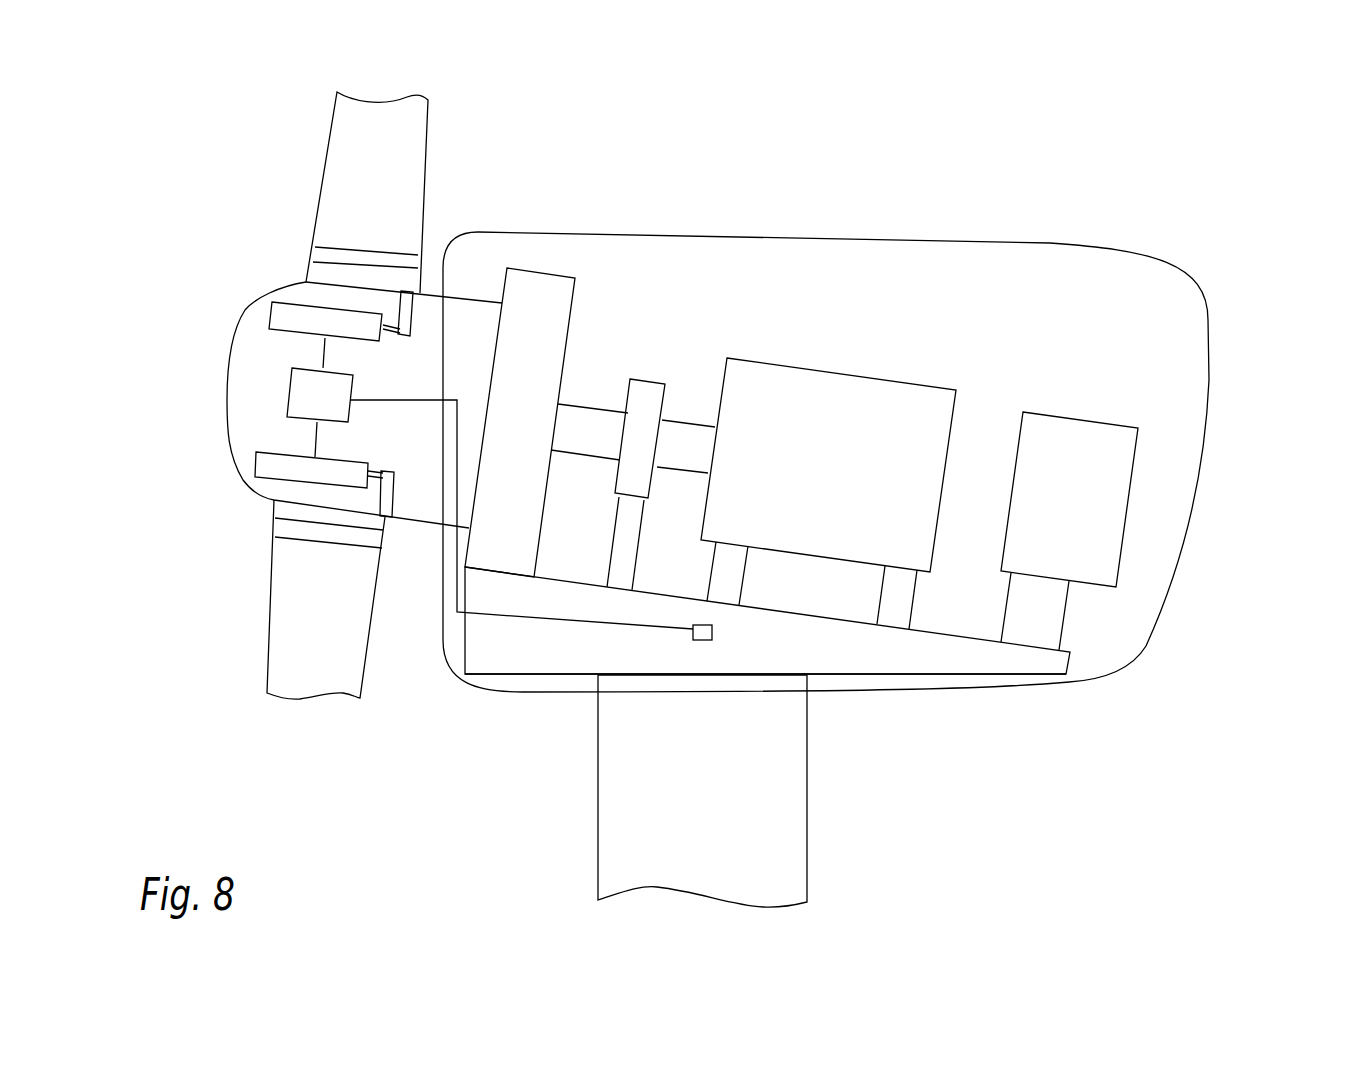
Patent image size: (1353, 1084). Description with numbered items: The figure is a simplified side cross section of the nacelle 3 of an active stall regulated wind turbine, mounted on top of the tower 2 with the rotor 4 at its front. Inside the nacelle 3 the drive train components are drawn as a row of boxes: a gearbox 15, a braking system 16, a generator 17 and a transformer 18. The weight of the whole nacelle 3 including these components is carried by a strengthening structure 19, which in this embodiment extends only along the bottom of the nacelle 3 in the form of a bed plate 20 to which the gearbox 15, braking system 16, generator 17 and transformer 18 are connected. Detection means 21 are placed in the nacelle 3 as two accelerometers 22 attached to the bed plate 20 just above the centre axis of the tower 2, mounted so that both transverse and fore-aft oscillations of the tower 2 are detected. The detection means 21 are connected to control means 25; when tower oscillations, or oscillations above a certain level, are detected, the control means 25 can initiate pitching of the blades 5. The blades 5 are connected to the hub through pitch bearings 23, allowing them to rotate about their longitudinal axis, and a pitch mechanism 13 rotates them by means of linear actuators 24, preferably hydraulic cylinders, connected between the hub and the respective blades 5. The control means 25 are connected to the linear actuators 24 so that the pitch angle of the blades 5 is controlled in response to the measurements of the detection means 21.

The tower 2 is at (777, 862).
The nacelle 3 is at (1243, 267).
The rotor 4 is at (308, 296).
The blades 5 is at (392, 183).
The pitch mechanism 13 is at (375, 483).
The gearbox 15 is at (538, 303).
The braking system 16 is at (648, 402).
The generator 17 is at (795, 415).
The transformer 18 is at (1089, 463).
The strengthening structure 19 is at (897, 652).
The bed plate 20 is at (855, 663).
The detection means 21 is at (712, 640).
The accelerometers 22 is at (693, 633).
The pitch bearings 23 is at (300, 533).
The linear actuators 24 is at (292, 315).
The control means 25 is at (303, 392).